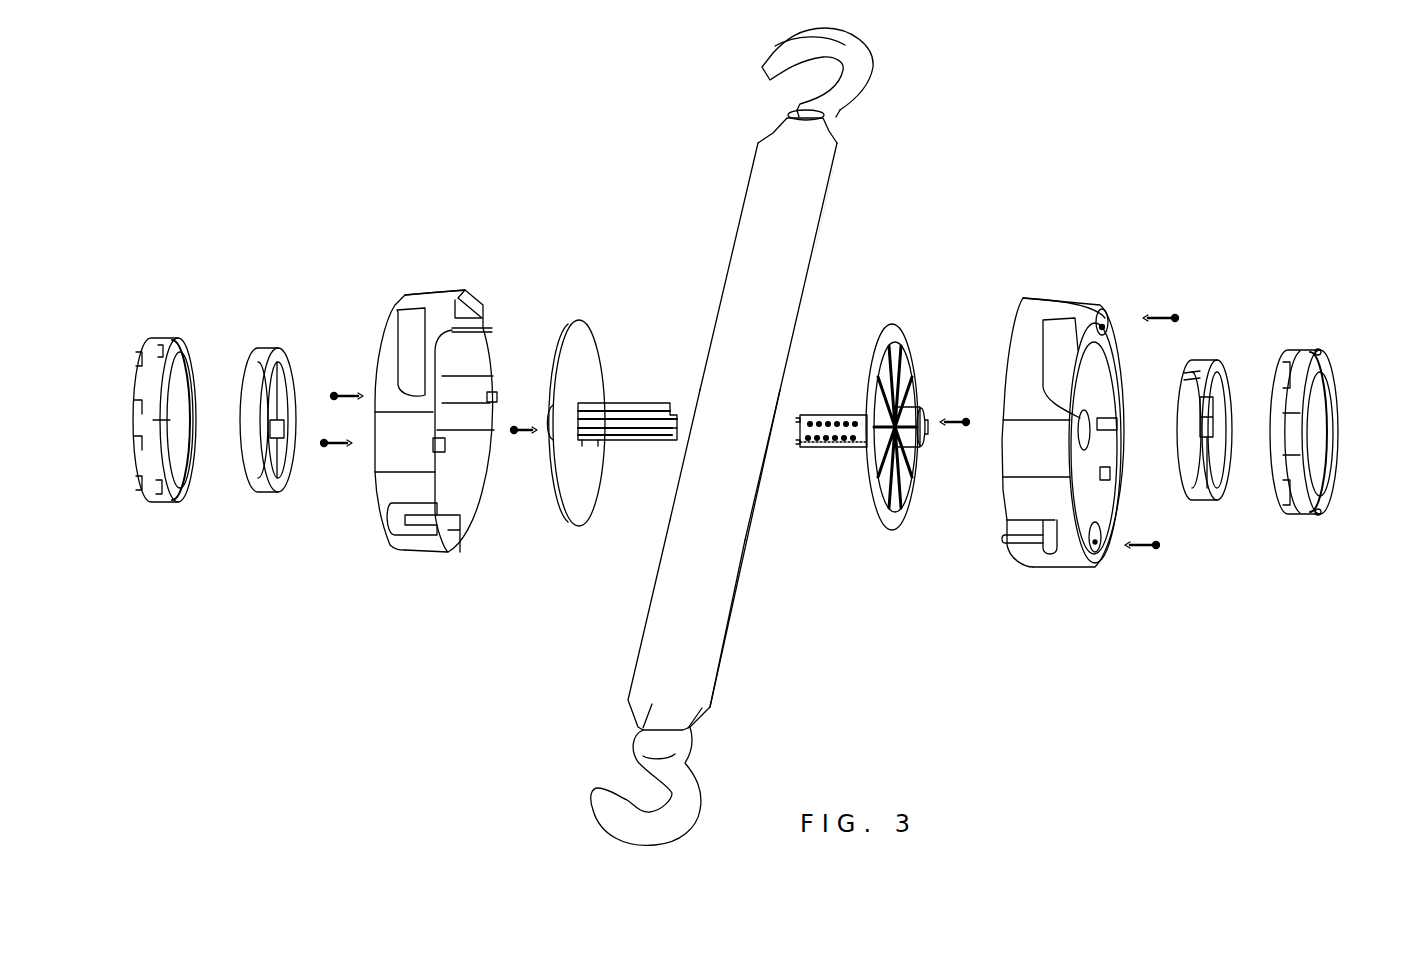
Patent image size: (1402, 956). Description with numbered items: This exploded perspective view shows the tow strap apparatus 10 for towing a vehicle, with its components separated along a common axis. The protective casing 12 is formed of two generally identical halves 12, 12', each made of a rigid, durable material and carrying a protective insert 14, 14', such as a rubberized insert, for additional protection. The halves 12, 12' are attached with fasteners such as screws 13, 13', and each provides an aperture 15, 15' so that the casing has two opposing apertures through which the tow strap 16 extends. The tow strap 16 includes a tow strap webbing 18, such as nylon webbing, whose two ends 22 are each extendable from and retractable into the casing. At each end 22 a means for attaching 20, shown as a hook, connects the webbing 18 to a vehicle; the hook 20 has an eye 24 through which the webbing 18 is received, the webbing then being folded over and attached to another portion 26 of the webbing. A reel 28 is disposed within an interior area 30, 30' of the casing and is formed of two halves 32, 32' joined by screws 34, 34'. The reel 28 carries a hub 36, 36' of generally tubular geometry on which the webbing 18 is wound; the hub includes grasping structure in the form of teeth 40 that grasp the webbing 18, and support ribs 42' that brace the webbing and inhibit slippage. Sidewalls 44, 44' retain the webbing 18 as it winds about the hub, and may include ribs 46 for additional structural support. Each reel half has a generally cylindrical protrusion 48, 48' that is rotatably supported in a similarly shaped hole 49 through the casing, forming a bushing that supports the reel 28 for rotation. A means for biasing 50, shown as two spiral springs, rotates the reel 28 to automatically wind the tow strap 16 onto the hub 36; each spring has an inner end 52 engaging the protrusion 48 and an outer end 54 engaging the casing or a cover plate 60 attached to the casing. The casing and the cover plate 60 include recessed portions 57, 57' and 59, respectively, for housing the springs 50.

The tow strap apparatus 10 is at (1106, 89).
The protective casing 12 is at (1082, 432).
The casing half 12' is at (436, 395).
The screws 13 is at (1153, 430).
The screws 13' is at (341, 420).
The protective insert 14 is at (1011, 448).
The protective insert 14' is at (388, 481).
The aperture 15 is at (1017, 575).
The aperture 15' is at (476, 430).
The tow strap 16 is at (667, 296).
The tow strap webbing 18 is at (714, 424).
The means for attaching 20 is at (757, 436).
The ends 22 is at (843, 443).
The eye 24 is at (766, 94).
The portion of the webbing 26 is at (866, 229).
The reel 28 is at (784, 623).
The interior area 30 is at (1018, 303).
The interior area 30' is at (465, 504).
The reel half 32 is at (925, 336).
The reel half 32' is at (609, 322).
The screws 34 is at (961, 397).
The screws 34' is at (517, 456).
The hub 36 is at (833, 364).
The hub 36' is at (630, 347).
The teeth 40 is at (825, 460).
The ribs 42' is at (633, 415).
The sidewall 44 is at (884, 401).
The sidewall 44' is at (599, 428).
The ribs 46 is at (929, 412).
The protrusion 48 is at (924, 454).
The protrusion 48' is at (530, 399).
The hole 49 is at (1133, 459).
The means for biasing 50 is at (747, 478).
The inner end 52 is at (769, 425).
The outer end 54 is at (1164, 364).
The recessed portion 57 is at (1136, 502).
The recessed portion 57' is at (357, 321).
The recessed portion 59 is at (749, 394).
The cover plate 60 is at (733, 426).